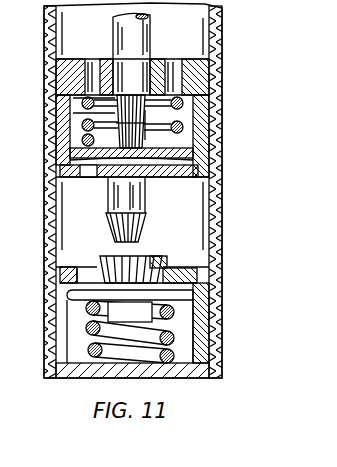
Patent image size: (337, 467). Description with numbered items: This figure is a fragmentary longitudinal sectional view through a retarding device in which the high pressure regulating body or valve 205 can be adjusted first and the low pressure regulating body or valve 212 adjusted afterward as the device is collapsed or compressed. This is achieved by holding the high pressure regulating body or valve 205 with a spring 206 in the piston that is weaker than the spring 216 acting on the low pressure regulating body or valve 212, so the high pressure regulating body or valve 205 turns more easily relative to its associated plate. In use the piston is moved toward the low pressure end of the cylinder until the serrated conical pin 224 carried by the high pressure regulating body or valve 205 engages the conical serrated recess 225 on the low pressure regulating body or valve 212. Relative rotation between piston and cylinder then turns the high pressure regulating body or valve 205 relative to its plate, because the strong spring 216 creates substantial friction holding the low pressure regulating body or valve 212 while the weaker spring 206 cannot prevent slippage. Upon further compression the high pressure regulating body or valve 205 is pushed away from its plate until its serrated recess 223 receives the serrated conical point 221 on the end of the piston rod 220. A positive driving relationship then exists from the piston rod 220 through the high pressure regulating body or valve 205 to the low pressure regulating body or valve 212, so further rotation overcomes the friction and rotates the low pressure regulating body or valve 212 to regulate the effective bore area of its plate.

The piston rod 220 is at (152, 21).
The spring 206 is at (182, 98).
The serrated conical point 221 is at (203, 110).
The serrated recess 223 is at (120, 135).
The high pressure regulating body or valve 205 is at (88, 161).
The serrated conical pin 224 is at (104, 216).
The conical serrated recess 225 is at (160, 239).
The low pressure regulating body or valve 212 is at (73, 290).
The spring 216 is at (88, 360).